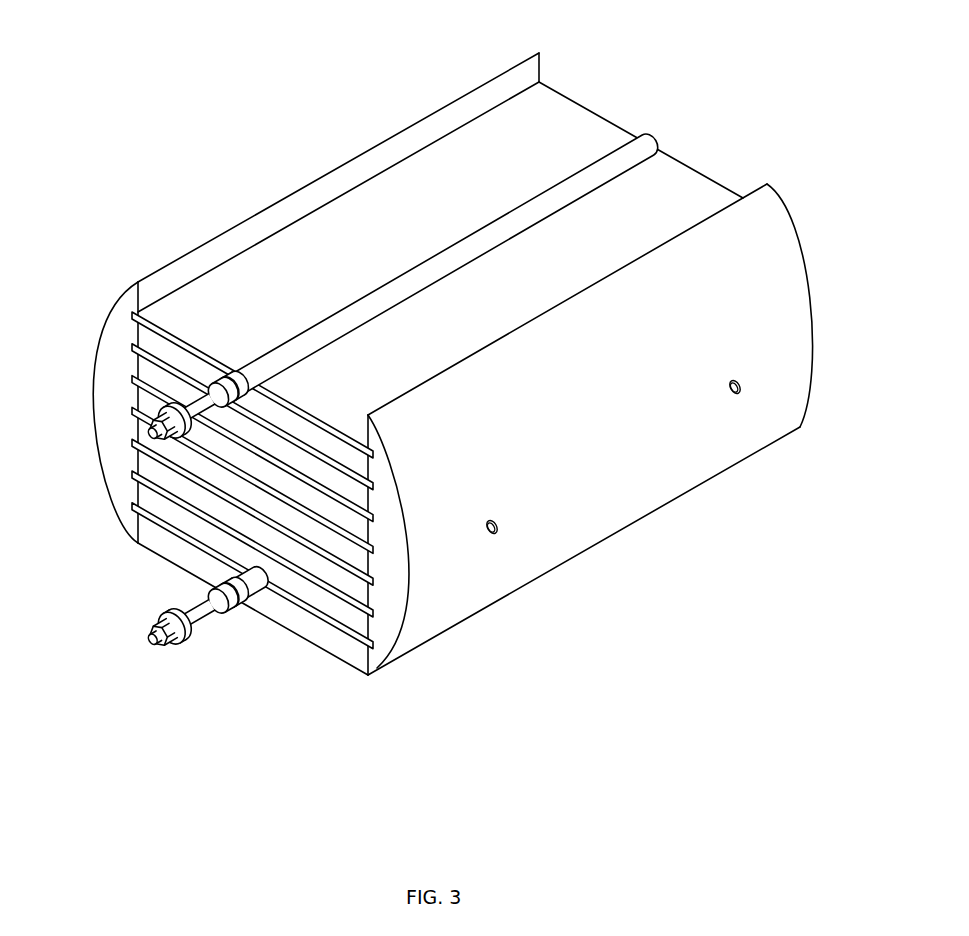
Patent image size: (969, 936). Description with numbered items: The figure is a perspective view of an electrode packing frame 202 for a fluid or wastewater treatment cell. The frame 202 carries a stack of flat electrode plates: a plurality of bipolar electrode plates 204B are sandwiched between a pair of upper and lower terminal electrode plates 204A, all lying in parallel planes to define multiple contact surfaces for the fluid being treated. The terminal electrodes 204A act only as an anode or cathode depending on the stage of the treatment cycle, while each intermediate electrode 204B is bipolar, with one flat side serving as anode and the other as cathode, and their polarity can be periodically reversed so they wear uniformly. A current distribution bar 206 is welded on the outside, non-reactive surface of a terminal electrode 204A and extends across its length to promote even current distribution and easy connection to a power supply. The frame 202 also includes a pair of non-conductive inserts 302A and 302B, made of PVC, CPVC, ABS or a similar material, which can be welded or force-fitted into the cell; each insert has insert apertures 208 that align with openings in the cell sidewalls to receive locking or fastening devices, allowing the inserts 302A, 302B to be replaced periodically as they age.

The electrode packing frame 202 is at (324, 56).
The terminal electrode plates 204A is at (197, 302).
The bipolar electrode plates 204B is at (188, 492).
The current distribution bar 206 is at (643, 147).
The insert apertures 208 is at (740, 392).
The non-conductive insert 302A is at (643, 455).
The non-conductive insert 302B is at (100, 400).